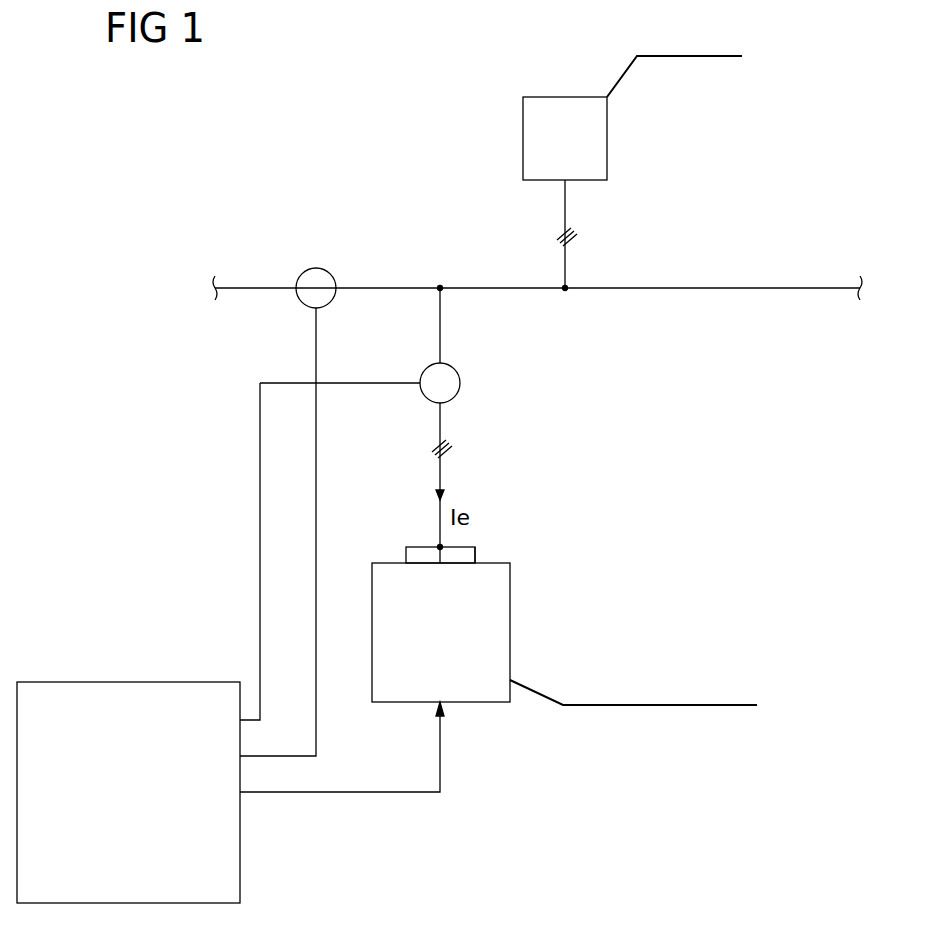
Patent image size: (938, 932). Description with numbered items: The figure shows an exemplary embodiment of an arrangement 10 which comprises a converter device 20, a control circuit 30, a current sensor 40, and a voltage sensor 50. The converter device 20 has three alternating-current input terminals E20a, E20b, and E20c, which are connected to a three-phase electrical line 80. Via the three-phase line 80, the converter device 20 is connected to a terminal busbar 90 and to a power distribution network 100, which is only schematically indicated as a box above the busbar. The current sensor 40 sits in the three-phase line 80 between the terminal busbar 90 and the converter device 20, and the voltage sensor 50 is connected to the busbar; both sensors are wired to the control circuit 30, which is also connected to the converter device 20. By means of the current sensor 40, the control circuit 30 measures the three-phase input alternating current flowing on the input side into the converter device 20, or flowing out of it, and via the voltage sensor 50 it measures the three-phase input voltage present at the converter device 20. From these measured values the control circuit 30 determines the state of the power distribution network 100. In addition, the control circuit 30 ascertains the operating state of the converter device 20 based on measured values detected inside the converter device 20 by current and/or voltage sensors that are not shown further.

The arrangement 10 is at (196, 483).
The converter device 20 is at (393, 702).
The control circuit 30 is at (133, 681).
The current sensor 40 is at (456, 392).
The voltage sensor 50 is at (316, 268).
The three-phase electrical line 80 is at (440, 333).
The terminal busbar 90 is at (728, 288).
The power distribution network 100 is at (608, 146).
The alternating-current input terminal E20a is at (405, 563).
The alternating-current input terminal E20b is at (440, 563).
The alternating-current input terminal E20c is at (475, 563).